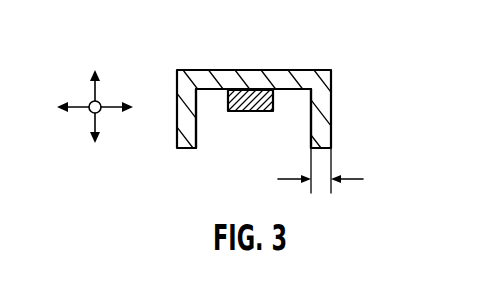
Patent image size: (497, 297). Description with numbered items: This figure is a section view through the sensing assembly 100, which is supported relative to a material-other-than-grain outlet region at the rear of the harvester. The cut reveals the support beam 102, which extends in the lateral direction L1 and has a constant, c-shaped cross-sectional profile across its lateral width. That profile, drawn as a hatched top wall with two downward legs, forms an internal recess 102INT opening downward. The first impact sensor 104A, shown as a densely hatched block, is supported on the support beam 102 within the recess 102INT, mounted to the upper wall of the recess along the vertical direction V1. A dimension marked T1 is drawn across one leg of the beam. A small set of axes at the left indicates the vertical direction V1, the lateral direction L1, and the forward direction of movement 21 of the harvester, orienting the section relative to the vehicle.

The sensing assembly 100 is at (218, 56).
The support beam 102 is at (183, 107).
The first impact sensor 104A is at (278, 88).
The internal recess 102INT is at (244, 127).
The wall thickness T1 is at (352, 178).
The vertical direction V1 is at (93, 92).
The lateral direction L1 is at (88, 110).
The forward direction of movement 21 is at (105, 109).